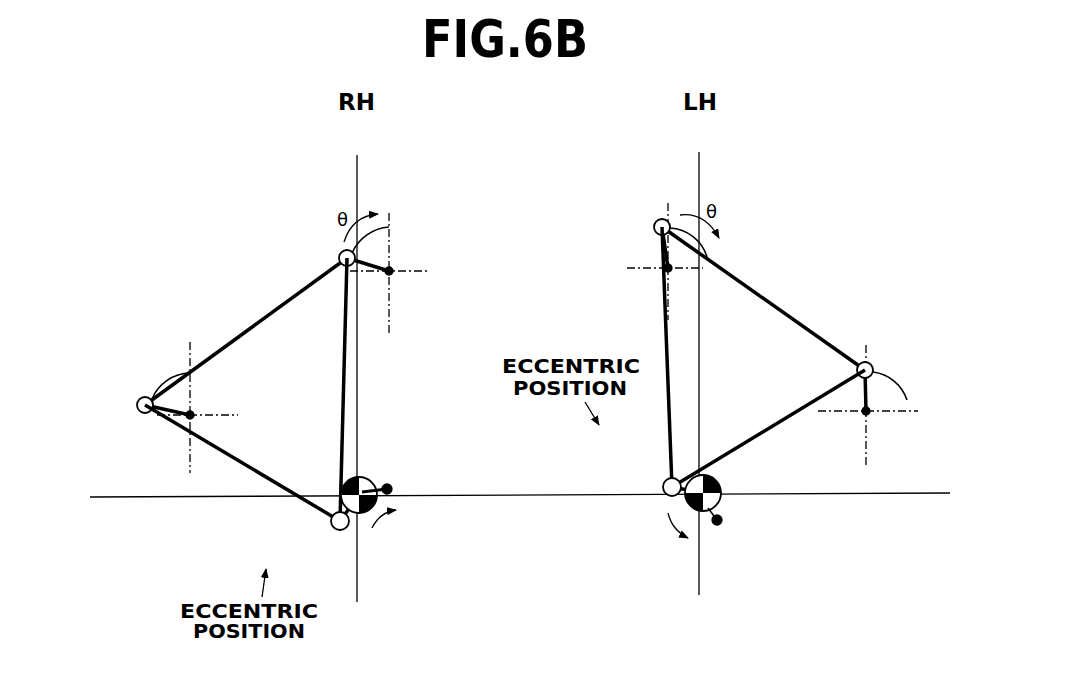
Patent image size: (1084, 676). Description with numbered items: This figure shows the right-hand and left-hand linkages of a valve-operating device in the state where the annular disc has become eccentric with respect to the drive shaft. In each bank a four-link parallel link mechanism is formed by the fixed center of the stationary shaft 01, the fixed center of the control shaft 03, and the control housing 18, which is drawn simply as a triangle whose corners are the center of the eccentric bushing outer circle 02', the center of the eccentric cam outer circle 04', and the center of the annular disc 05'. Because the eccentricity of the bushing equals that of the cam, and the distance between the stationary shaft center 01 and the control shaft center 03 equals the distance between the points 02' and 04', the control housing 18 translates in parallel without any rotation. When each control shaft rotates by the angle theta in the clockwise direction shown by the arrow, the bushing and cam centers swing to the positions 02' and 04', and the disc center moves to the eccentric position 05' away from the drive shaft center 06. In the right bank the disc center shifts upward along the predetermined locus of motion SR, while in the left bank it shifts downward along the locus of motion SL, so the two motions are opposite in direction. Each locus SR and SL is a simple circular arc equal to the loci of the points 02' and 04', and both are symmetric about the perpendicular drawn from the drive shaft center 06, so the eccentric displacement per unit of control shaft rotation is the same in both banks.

The center of the stationary shaft 01 is at (193, 412).
The center of the eccentric bushing outer peripheral circle 02' is at (527, 360).
The center of the control shaft 03 is at (392, 268).
The center of the eccentric cam outer peripheral circle 04' is at (482, 216).
The center of the annular disc 05' is at (505, 395).
The center of the intake-camshaft drive shaft 06 is at (367, 480).
The control housing 18 is at (250, 327).
The predetermined locus of motion (right bank) SR is at (385, 486).
The predetermined locus of motion (left bank) SL is at (723, 512).